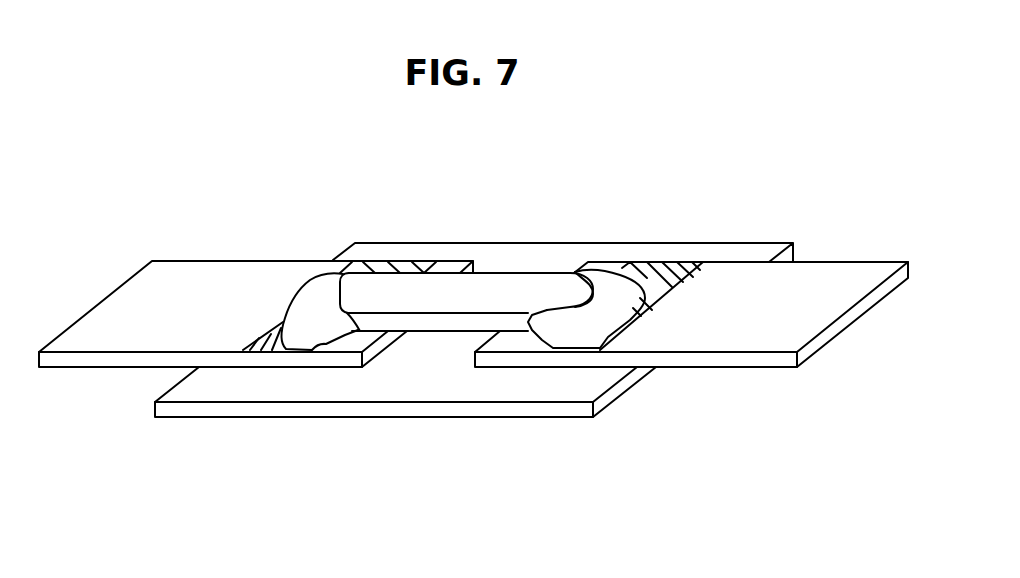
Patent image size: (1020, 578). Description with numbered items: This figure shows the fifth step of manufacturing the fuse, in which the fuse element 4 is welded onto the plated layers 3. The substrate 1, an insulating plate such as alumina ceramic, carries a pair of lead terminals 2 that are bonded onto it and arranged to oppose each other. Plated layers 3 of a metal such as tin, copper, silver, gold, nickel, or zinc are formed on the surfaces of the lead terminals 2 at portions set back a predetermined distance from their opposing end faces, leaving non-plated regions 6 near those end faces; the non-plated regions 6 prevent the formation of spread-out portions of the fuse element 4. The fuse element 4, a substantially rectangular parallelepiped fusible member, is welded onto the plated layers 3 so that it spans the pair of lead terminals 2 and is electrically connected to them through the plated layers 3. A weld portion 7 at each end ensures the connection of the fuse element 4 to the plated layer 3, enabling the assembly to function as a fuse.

The substrate 1 is at (435, 347).
The lead terminals 2 is at (228, 302).
The plated layers 3 is at (402, 268).
The fuse element 4 is at (502, 287).
The non-plated regions 6 is at (358, 340).
The weld portion 7 is at (296, 323).